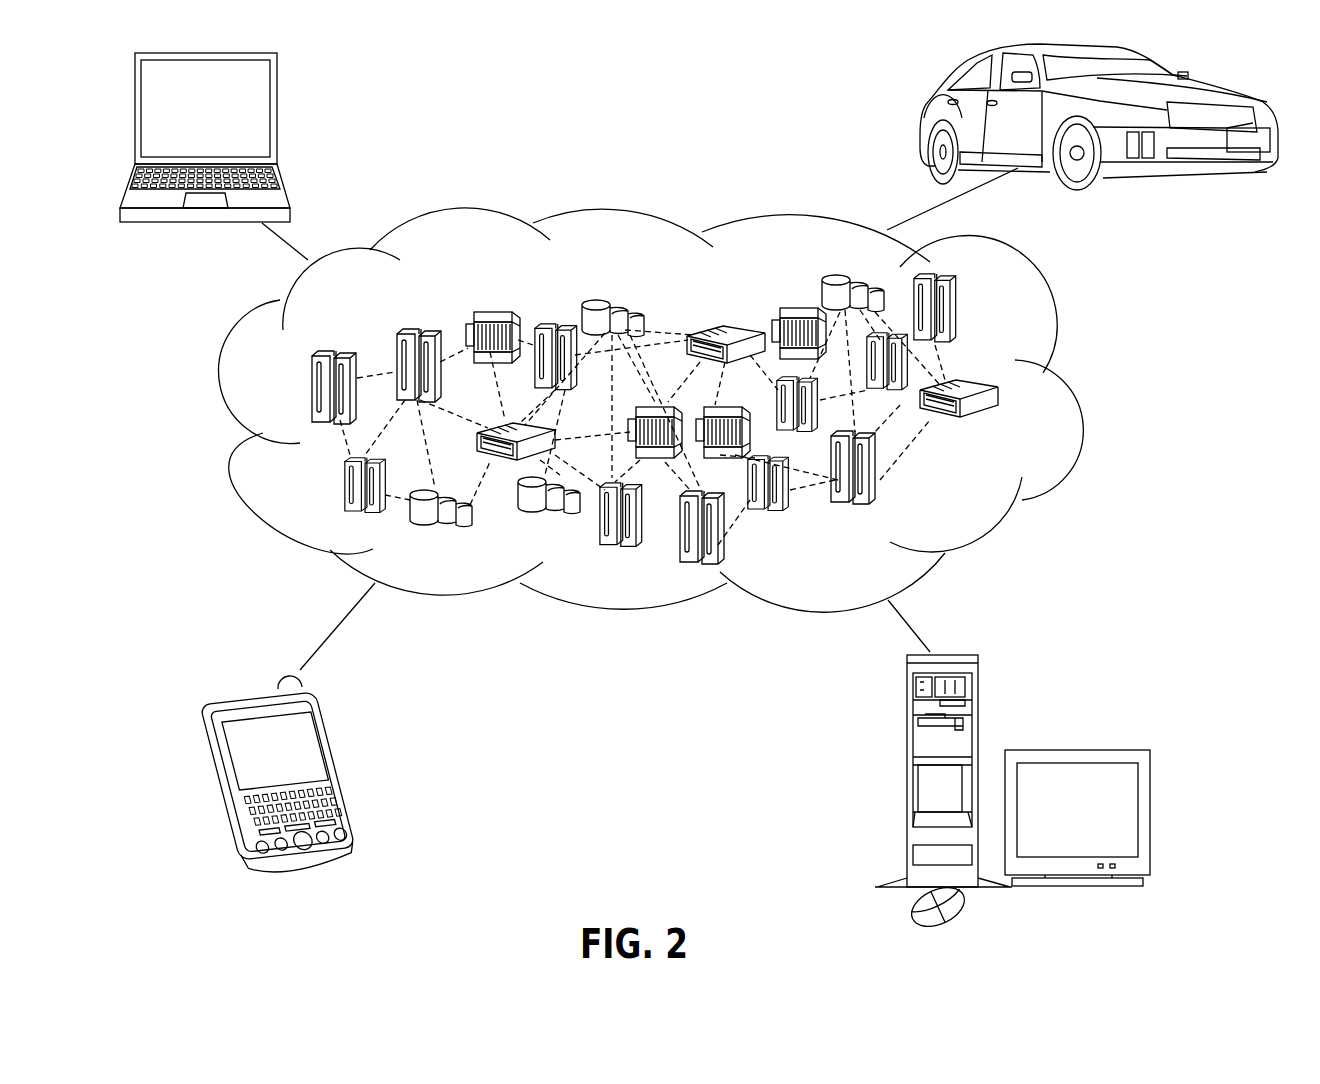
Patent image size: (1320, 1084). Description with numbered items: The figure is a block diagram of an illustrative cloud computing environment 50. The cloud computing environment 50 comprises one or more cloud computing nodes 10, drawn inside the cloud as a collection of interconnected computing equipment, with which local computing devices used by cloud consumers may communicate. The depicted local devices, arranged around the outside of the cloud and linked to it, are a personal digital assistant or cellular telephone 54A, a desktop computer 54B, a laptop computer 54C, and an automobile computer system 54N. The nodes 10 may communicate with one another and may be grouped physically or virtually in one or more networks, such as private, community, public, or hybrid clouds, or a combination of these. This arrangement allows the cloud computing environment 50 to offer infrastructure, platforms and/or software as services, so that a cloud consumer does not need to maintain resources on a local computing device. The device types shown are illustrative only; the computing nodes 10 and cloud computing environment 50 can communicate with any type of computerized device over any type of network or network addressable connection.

The cloud computing nodes 10 is at (983, 505).
The cloud computing environment 50 is at (1075, 402).
The personal digital assistant or cellular telephone 54A is at (330, 734).
The desktop computer 54B is at (907, 719).
The laptop computer 54C is at (277, 92).
The automobile computer system 54N is at (912, 113).